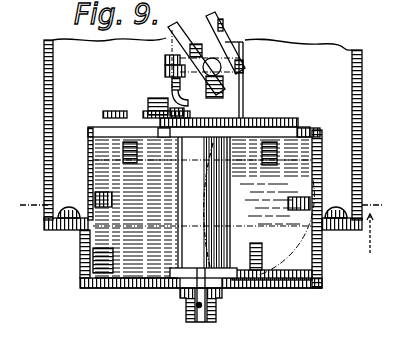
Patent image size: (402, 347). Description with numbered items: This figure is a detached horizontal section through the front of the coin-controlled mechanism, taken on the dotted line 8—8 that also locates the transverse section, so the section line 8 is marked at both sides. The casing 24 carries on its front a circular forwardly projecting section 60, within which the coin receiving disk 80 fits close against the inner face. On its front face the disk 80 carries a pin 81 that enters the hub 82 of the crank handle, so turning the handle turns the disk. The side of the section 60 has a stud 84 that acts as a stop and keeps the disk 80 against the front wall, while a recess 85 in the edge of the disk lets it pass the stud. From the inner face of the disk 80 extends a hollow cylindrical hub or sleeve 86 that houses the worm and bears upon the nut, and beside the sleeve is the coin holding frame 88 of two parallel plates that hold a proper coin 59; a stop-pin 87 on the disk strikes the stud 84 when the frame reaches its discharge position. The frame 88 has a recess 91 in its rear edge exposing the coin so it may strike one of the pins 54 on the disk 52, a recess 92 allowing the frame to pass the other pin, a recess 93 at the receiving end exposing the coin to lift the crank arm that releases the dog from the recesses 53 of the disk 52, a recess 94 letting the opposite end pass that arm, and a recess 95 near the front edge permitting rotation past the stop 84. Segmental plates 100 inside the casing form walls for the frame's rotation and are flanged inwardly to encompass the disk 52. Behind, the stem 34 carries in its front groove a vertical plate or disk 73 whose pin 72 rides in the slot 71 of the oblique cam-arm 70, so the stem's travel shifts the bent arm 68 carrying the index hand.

The dotted line 8— 8 is at (195, 222).
The casing 24 is at (214, 134).
The stem 34 is at (224, 23).
The disk 52 is at (108, 118).
The recesses 53 is at (158, 126).
The pins 54 is at (248, 118).
The coin 59 is at (314, 180).
The circular forwardly projecting section 60 is at (82, 289).
The bent arm 68 is at (162, 100).
The cam-arm 70 is at (173, 25).
The slot 71 is at (225, 95).
The pin 72 is at (242, 44).
The vertical plate or disk 73 is at (165, 62).
The disk 80 is at (132, 290).
The pin 81 is at (186, 322).
The hub 82 is at (208, 322).
The stud 84 is at (322, 262).
The recess 85 is at (228, 292).
The hollow cylindrical hub or sleeve 86 is at (176, 290).
The stop-pin 87 is at (262, 258).
The coin holding frame 88 is at (202, 206).
The recess 91 is at (278, 158).
The recess 92 is at (88, 140).
The recess 93 is at (362, 185).
The recess 94 is at (95, 198).
The recess 95 is at (80, 253).
The segmental plates 100 is at (88, 170).